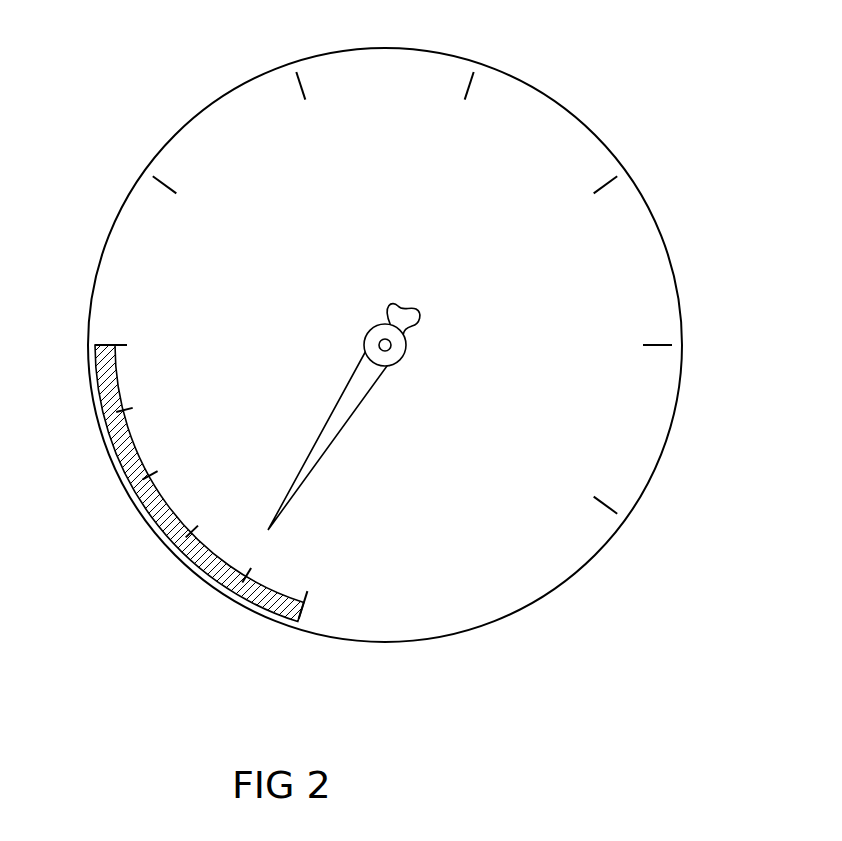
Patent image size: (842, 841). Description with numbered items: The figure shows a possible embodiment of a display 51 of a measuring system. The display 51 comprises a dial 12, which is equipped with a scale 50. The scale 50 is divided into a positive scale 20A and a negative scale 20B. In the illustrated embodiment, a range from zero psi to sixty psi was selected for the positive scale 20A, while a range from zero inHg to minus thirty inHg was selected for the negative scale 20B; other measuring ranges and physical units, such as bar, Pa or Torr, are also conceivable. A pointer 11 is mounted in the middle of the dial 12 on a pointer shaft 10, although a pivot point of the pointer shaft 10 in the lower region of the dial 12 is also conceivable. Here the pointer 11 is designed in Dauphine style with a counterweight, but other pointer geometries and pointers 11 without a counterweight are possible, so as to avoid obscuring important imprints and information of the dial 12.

The dial 12 is at (394, 96).
The pointer shaft 10 is at (370, 346).
The pointer 11 is at (411, 313).
The positive scale 20A is at (645, 282).
The negative scale 20B is at (222, 581).
The scale 50 is at (152, 181).
The display 51 is at (745, 46).